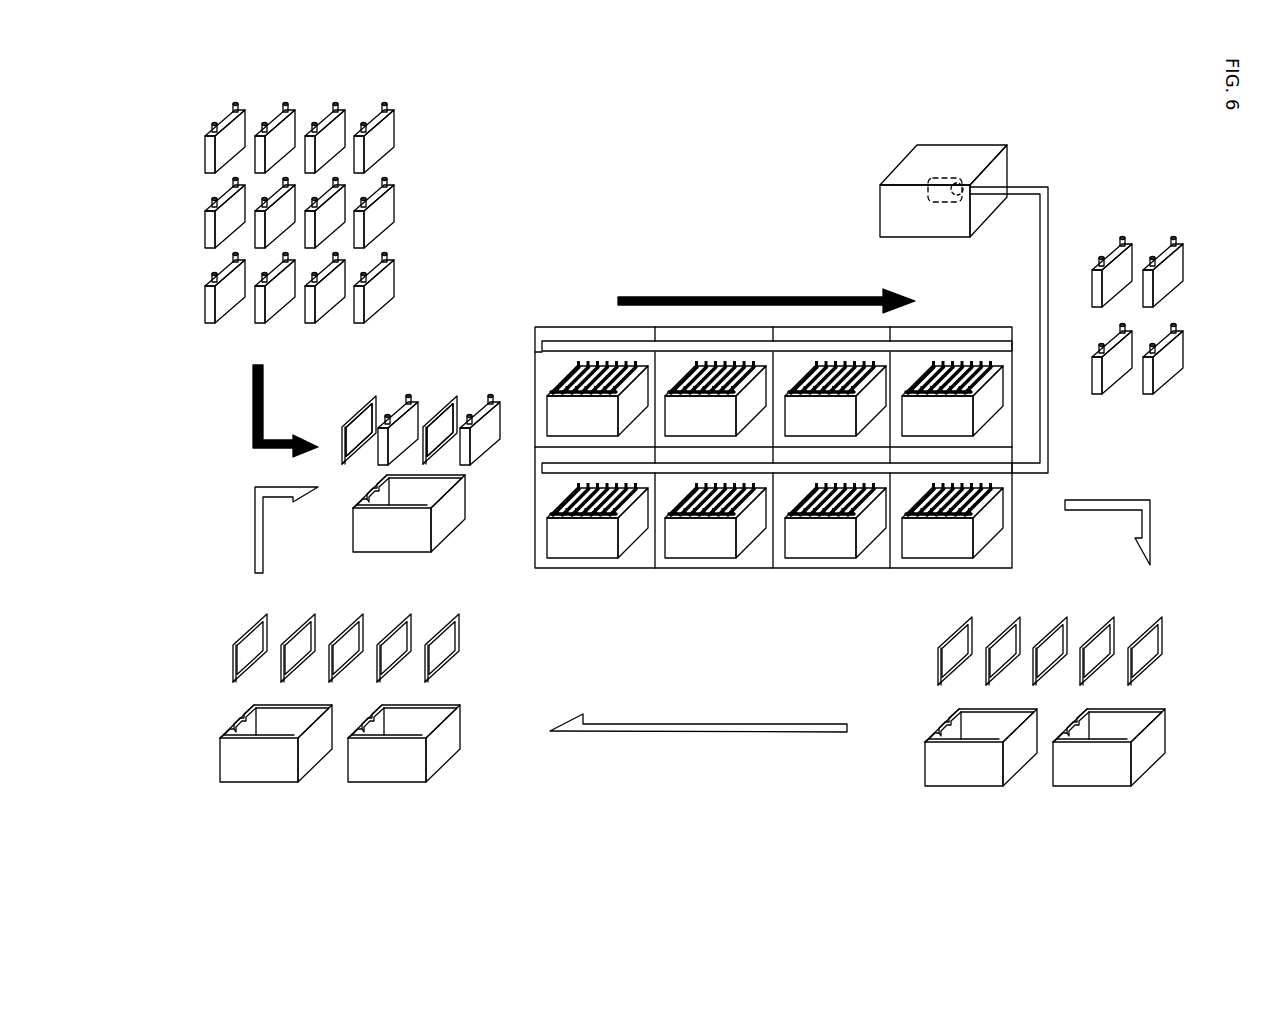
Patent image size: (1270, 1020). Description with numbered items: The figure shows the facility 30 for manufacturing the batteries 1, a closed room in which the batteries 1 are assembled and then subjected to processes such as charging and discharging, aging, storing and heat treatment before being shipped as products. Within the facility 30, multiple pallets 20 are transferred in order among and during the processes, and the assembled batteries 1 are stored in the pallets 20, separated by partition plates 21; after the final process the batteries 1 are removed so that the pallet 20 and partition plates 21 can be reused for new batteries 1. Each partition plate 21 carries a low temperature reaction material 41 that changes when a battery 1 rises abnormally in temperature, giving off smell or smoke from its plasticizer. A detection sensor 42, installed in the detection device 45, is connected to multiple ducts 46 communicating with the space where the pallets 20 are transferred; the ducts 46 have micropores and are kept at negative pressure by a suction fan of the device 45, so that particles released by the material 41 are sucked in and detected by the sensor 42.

The battery 1 is at (418, 116).
The pallet 20 is at (455, 505).
The partition plate 21 is at (371, 398).
The facility 30 is at (700, 432).
The low temperature reaction material 41 is at (361, 420).
The detection sensor 42 is at (928, 192).
The detection device 45 is at (908, 158).
The duct 46 is at (1022, 342).